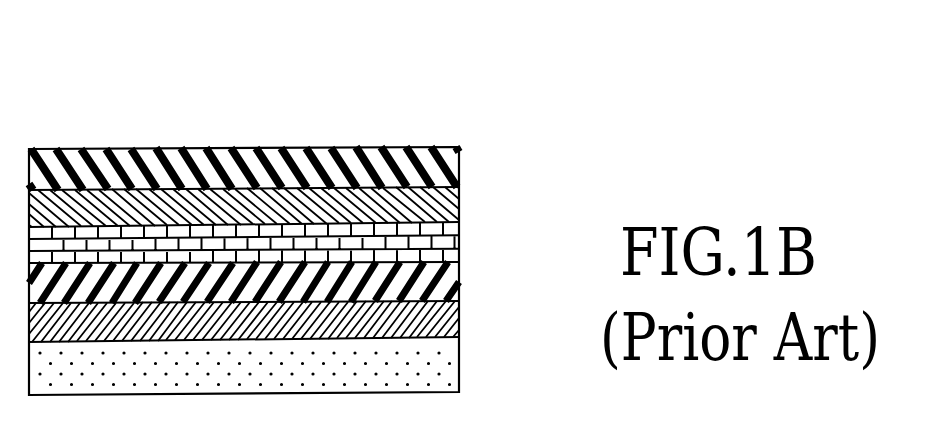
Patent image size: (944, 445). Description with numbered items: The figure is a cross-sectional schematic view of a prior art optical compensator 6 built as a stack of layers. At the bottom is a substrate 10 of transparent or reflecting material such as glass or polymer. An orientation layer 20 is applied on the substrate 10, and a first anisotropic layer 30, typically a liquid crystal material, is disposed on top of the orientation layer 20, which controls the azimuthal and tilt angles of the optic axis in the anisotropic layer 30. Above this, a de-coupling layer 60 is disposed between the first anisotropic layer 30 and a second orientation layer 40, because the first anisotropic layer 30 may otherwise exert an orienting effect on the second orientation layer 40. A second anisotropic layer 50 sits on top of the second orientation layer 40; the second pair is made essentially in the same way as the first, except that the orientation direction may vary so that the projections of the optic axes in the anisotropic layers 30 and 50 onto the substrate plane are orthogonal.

The optical compensator 6 is at (300, 127).
The substrate 10 is at (459, 373).
The orientation layer 20 is at (459, 317).
The anisotropic layer 30 is at (459, 281).
The de-coupling layer 60 is at (459, 250).
The second orientation layer 40 is at (459, 203).
The second anisotropic layer 50 is at (459, 165).